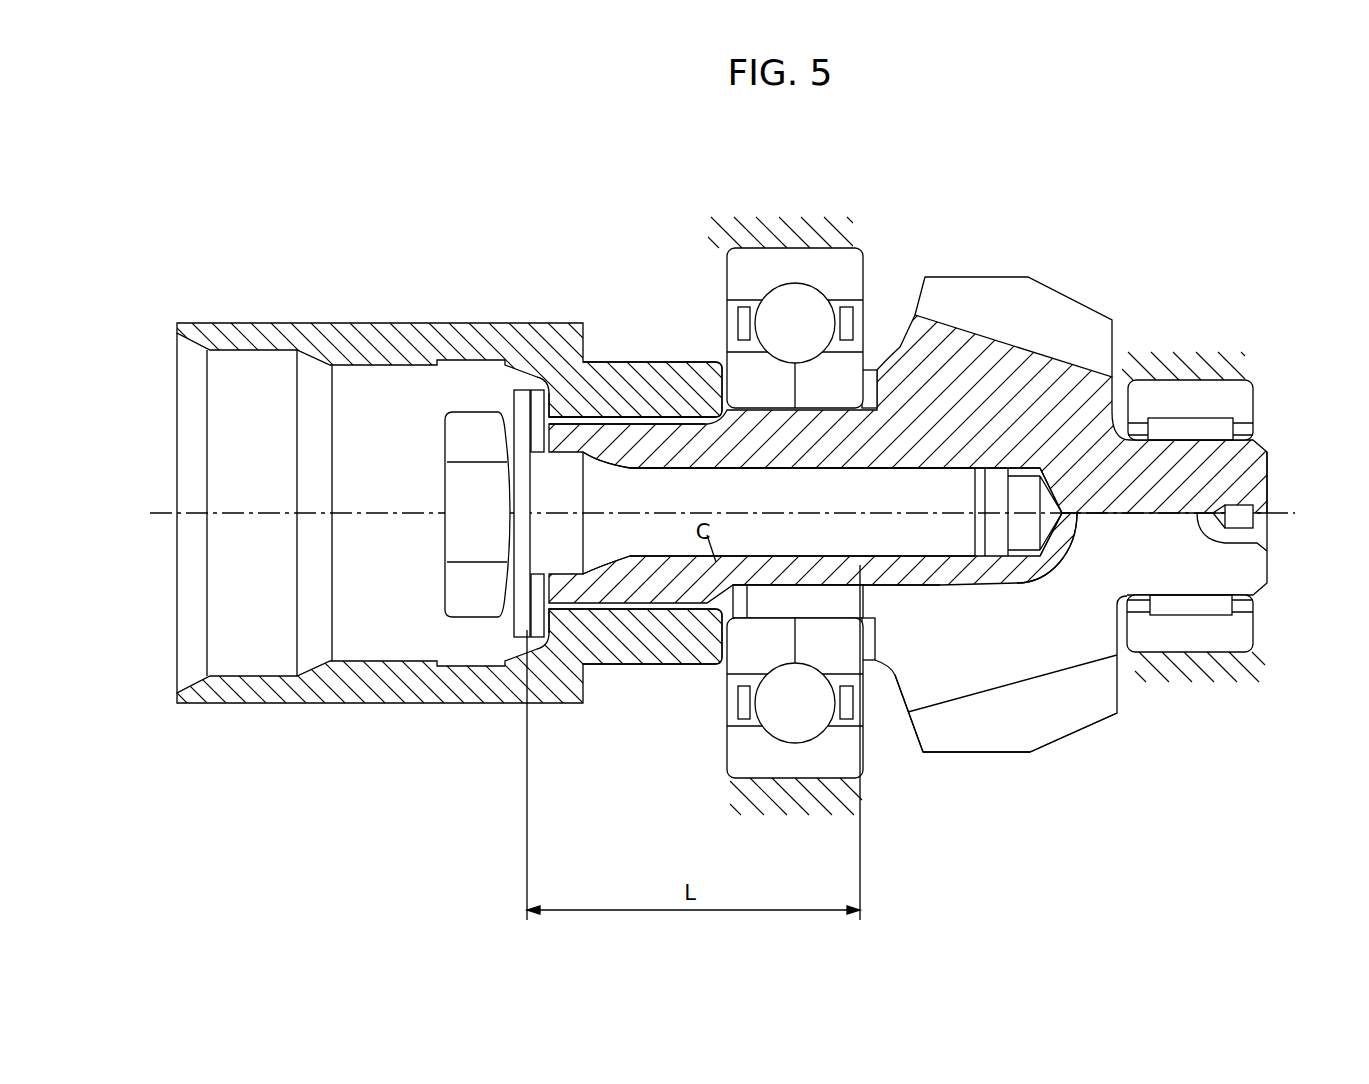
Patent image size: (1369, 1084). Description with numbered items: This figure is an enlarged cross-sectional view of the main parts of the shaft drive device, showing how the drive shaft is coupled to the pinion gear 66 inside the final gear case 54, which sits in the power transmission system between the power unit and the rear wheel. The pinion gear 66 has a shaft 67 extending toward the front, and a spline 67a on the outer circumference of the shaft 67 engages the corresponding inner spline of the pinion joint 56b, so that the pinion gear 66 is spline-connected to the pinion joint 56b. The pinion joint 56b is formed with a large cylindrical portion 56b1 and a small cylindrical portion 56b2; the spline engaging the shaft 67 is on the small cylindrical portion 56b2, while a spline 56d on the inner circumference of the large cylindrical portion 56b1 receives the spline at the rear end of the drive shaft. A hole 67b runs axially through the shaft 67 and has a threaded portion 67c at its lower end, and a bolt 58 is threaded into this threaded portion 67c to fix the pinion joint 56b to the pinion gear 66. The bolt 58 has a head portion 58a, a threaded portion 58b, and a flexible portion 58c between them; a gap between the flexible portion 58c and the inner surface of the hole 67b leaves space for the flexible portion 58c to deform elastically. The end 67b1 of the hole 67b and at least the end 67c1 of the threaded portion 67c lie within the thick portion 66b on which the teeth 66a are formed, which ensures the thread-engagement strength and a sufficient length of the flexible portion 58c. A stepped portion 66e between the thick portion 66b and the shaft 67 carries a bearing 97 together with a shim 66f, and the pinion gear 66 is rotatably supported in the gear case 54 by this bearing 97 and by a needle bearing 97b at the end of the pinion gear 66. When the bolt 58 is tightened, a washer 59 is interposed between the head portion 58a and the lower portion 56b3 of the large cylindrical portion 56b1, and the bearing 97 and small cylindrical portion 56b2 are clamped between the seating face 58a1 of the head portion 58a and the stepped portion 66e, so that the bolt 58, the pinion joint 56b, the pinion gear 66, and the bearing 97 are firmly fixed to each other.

The final gear case 54 is at (822, 222).
The pinion joint 56b is at (378, 320).
The large cylindrical portion 56b1 is at (243, 322).
The small cylindrical portion 56b2 is at (622, 372).
The lower portion of the large cylindrical portion 56b3 is at (585, 690).
The spline 56d is at (345, 663).
The bolt 58 is at (700, 602).
The head portion 58a is at (446, 568).
The seating face 58a1 is at (582, 458).
The threaded portion 58b is at (991, 512).
The flexible portion 58c is at (668, 538).
The washer 59 is at (523, 392).
The pinion gear 66 is at (1078, 283).
The teeth 66a is at (978, 742).
The thick portion 66b is at (973, 657).
The stepped portion 66e is at (878, 632).
The shim 66f is at (877, 665).
The shaft 67 is at (812, 605).
The spline 67a is at (657, 410).
The hole 67b is at (741, 470).
The end of the hole 67b1 is at (1047, 522).
The threaded portion 67c is at (943, 563).
The end of the threaded portion 67c1 is at (1017, 578).
The bearing 97 is at (858, 273).
The needle bearing 97b is at (1257, 383).